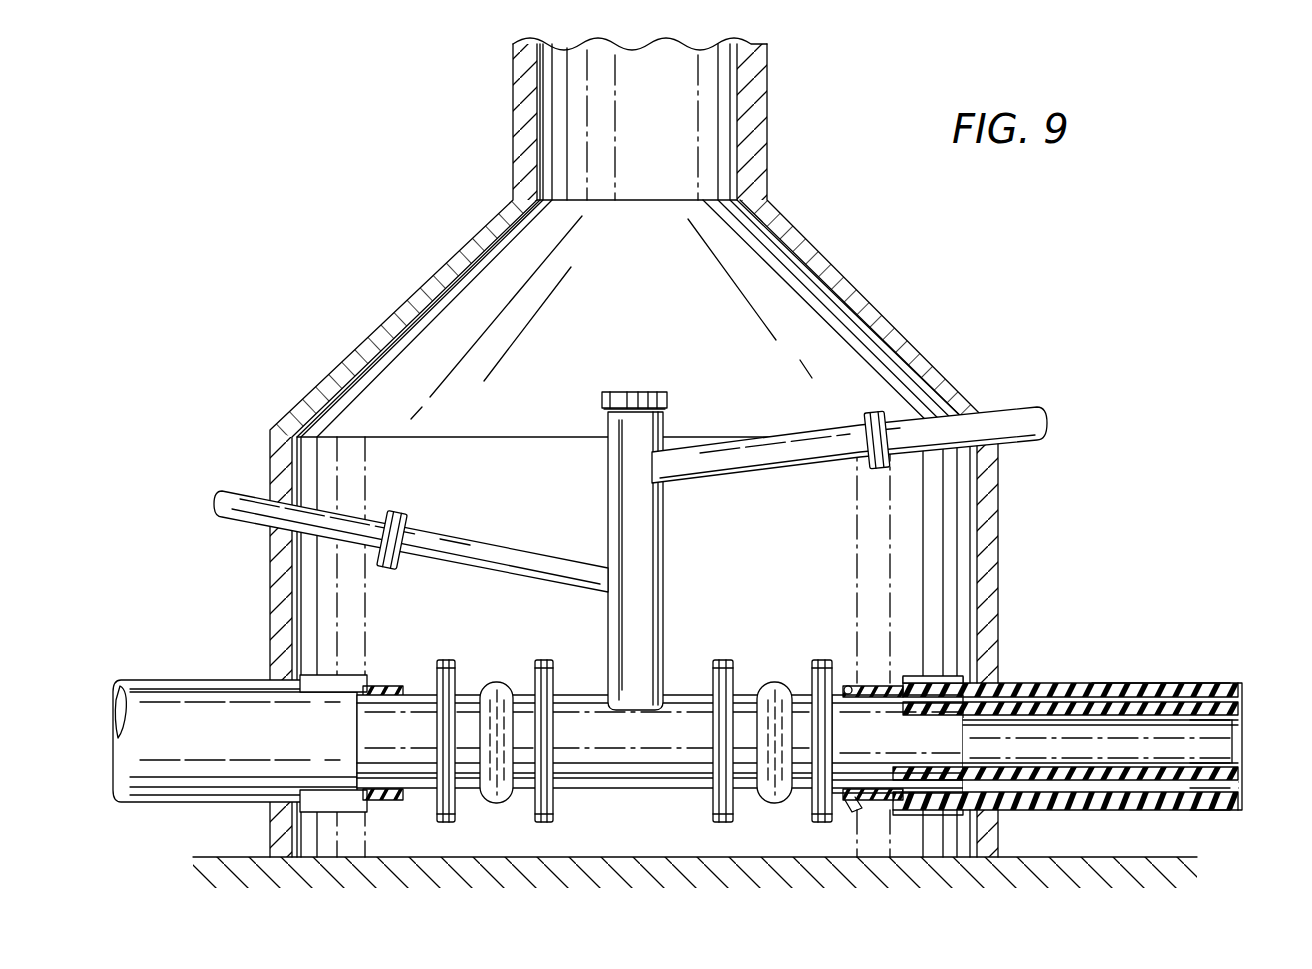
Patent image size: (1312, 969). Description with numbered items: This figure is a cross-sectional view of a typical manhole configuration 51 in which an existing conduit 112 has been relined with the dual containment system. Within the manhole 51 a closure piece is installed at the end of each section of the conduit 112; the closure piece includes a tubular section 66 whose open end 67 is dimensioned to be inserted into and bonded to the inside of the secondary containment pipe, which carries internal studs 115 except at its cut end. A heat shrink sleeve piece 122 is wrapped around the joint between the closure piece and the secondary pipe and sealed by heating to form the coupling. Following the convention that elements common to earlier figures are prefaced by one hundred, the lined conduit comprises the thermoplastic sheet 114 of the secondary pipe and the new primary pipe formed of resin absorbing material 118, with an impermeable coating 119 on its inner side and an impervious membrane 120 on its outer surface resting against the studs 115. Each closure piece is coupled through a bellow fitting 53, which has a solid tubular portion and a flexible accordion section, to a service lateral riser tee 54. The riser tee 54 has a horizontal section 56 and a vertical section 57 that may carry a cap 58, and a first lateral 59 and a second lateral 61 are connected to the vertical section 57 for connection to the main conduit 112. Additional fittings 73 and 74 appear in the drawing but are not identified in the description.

The manhole configuration 51 is at (855, 272).
The bellow fitting 53 is at (497, 810).
The service lateral riser tee 54 is at (594, 640).
The horizontal section 56 is at (670, 723).
The vertical section 57 is at (632, 533).
The cap 58 is at (625, 392).
The first lateral 59 is at (333, 527).
The second lateral 61 is at (958, 412).
The tubular section 66 is at (970, 743).
The open end 67 is at (1092, 683).
The hose clamp 73 is at (848, 686).
The support bracket 74 is at (855, 808).
The existing conduit 112 is at (1152, 821).
The thermoplastic sheet 114 is at (222, 735).
The studs 115 is at (1210, 795).
The resin absorbing material 118 is at (1212, 722).
The impermeable coating 119 is at (1205, 767).
The impervious membrane 120 is at (1202, 790).
The heat shrink sleeve piece 122 is at (930, 680).